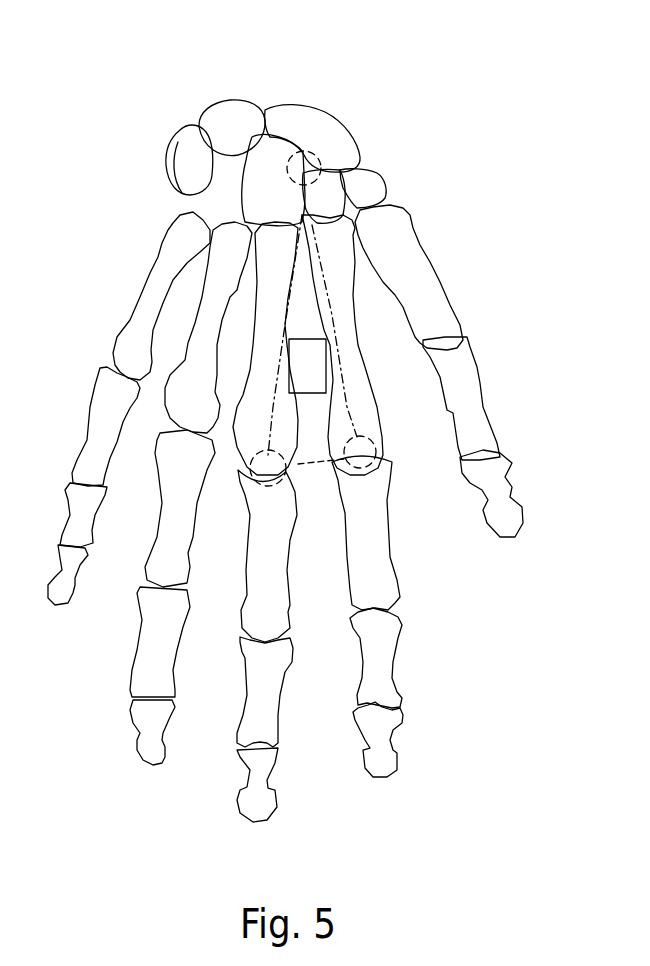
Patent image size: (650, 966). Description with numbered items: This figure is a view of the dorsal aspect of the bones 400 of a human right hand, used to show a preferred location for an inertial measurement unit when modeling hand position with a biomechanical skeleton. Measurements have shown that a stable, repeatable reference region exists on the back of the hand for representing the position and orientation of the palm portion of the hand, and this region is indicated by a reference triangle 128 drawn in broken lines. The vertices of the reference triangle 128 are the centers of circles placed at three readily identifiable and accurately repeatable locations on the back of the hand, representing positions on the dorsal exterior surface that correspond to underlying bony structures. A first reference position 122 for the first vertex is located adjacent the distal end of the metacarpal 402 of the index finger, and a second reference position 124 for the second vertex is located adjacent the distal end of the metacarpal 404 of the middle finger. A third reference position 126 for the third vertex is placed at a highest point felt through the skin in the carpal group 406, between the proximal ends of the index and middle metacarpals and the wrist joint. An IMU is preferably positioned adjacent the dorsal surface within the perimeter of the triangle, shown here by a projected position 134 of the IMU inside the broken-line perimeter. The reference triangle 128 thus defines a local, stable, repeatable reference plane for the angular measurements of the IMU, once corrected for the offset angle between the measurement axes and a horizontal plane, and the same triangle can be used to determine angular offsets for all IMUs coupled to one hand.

The bones 400 is at (142, 42).
The carpal group 406 is at (432, 134).
The third reference position 126 is at (303, 152).
The projected position of an IMU 134 is at (307, 340).
The reference triangle 128 is at (337, 343).
The metacarpal of the index finger 402 is at (377, 410).
The second reference position 124 is at (252, 483).
The first reference position 122 is at (367, 477).
The metacarpal of the middle finger 404 is at (302, 460).